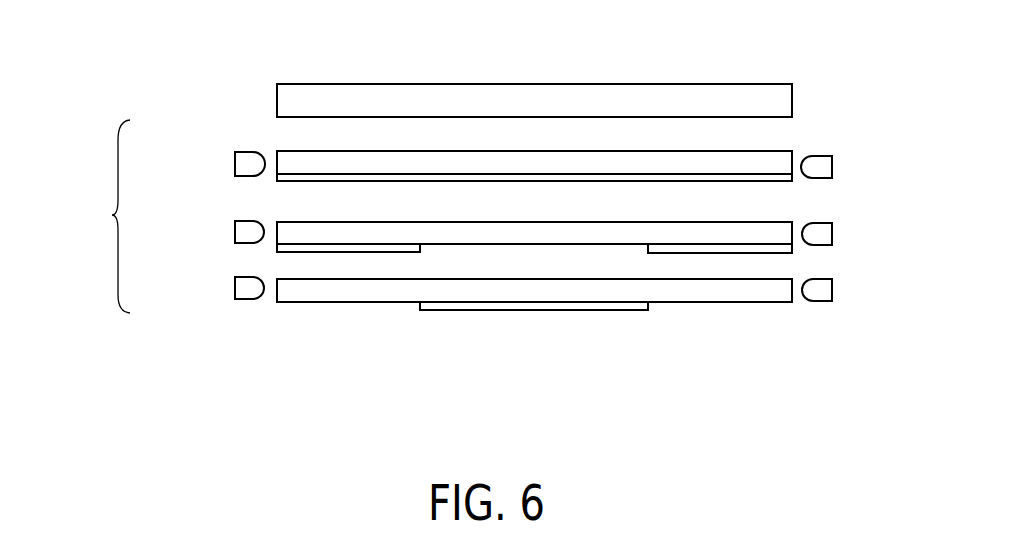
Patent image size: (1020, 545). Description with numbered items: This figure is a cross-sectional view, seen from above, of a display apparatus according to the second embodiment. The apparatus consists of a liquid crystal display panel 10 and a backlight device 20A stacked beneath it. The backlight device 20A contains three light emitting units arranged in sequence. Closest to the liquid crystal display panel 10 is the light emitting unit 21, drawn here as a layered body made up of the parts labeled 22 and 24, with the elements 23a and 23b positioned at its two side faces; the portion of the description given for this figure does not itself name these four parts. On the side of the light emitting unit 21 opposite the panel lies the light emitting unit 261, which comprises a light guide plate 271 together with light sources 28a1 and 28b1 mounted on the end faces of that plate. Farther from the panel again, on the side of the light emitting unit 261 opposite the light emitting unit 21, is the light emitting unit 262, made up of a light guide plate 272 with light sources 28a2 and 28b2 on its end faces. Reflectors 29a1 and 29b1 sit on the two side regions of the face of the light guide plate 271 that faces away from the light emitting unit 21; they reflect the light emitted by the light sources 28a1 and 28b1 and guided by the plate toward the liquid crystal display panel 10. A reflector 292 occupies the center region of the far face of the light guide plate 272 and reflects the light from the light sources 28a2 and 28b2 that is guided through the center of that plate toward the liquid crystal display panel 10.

The liquid crystal display panel 10 is at (743, 92).
The backlight device 20A is at (107, 226).
The light emitting unit 21 is at (162, 156).
The base layer 22 is at (486, 160).
The thin film layer 24 is at (604, 178).
The left terminal 23a is at (250, 158).
The right terminal 23b is at (820, 161).
The light emitting unit 261 is at (175, 237).
The light emitting unit 262 is at (175, 299).
The light source 28a1 is at (249, 241).
The light source 28a2 is at (249, 298).
The light source 28b1 is at (820, 245).
The light source 28b2 is at (820, 301).
The reflector 29a1 is at (343, 246).
The reflector 29b1 is at (746, 249).
The reflector 292 is at (509, 311).
The light guide plate 271 is at (585, 240).
The light guide plate 272 is at (668, 299).